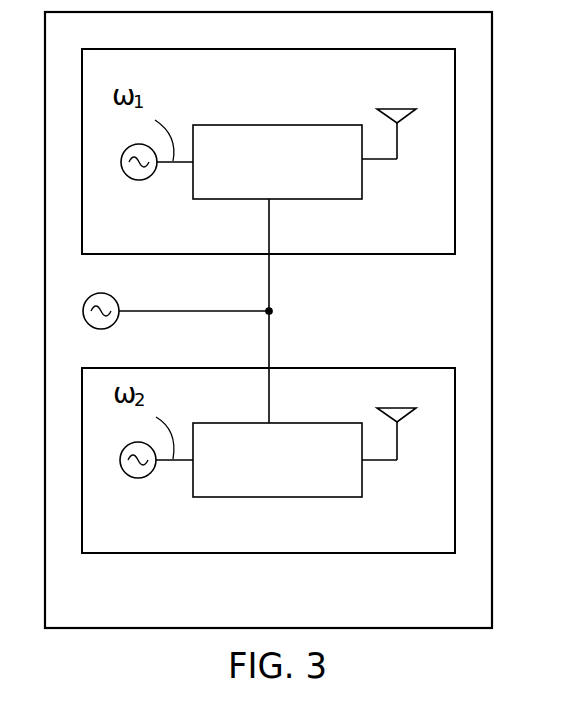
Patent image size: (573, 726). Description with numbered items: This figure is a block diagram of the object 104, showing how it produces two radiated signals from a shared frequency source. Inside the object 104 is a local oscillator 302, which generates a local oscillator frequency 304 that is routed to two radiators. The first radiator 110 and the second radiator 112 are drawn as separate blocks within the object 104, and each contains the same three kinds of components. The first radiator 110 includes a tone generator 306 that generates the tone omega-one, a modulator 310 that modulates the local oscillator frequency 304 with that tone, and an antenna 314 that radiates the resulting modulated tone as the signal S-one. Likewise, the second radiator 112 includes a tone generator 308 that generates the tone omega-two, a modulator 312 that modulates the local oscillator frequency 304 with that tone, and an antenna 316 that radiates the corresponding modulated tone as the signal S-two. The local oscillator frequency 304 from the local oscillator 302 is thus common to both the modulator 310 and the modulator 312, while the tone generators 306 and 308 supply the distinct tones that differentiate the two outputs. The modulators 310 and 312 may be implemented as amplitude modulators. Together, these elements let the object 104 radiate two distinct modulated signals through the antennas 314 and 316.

The object 104 is at (327, 616).
The radiator 110 is at (339, 84).
The radiator 112 is at (339, 542).
The local oscillator 302 is at (108, 327).
The local oscillator frequency 304 is at (186, 309).
The tone generator 306 is at (117, 177).
The tone generator 308 is at (120, 477).
The modulator 310 is at (277, 162).
The modulator 312 is at (277, 460).
The antenna 314 is at (402, 117).
The antenna 316 is at (402, 416).